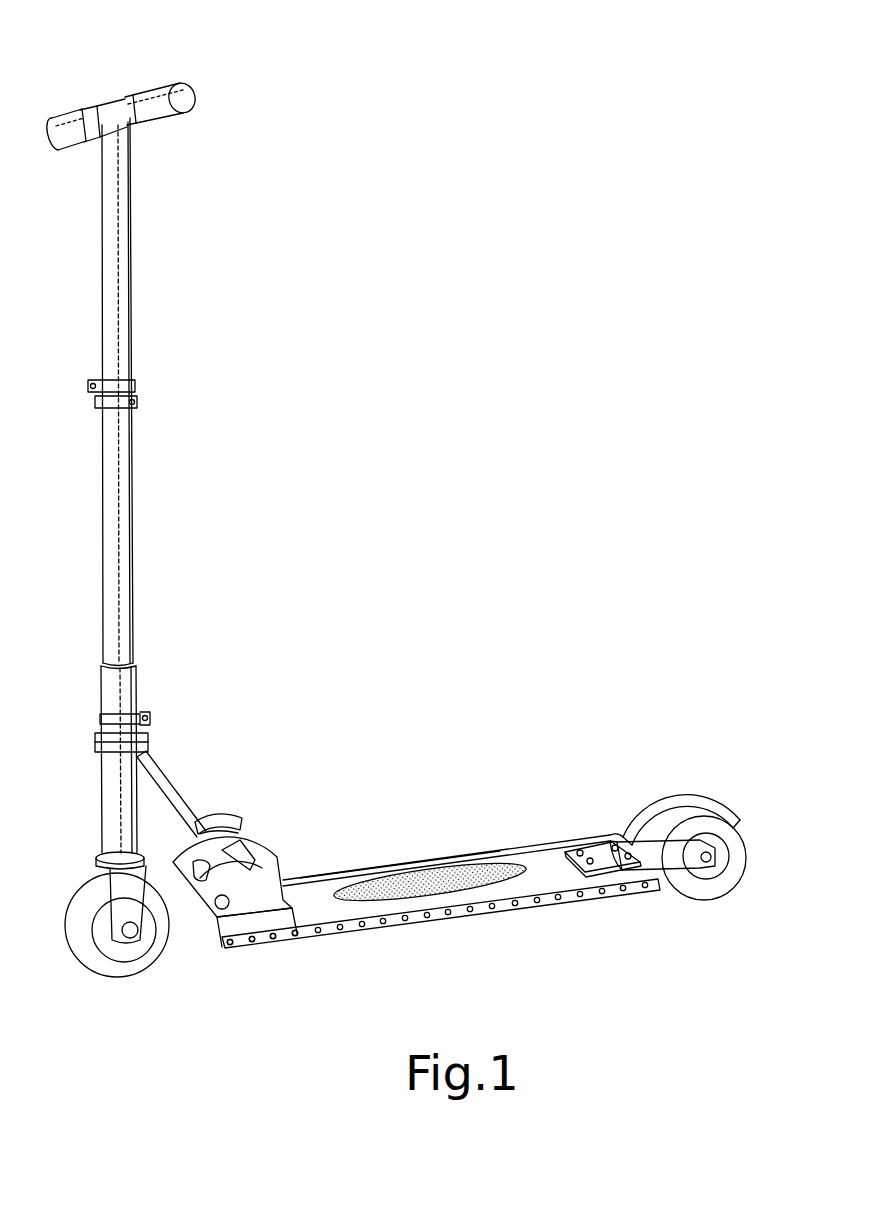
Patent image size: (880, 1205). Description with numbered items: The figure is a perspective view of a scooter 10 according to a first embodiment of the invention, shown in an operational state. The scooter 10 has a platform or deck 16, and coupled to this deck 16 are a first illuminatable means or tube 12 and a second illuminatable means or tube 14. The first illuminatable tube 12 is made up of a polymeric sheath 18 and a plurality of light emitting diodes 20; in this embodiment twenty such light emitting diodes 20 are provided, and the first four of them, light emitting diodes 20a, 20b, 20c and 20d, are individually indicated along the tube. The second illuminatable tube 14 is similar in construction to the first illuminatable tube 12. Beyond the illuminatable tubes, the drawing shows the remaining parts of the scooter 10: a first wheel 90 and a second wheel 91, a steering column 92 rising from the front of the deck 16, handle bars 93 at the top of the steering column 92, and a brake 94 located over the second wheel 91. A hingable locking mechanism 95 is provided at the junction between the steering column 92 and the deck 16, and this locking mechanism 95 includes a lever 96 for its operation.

The scooter 10 is at (300, 639).
The first illuminatable tube 12 is at (615, 890).
The second illuminatable tube 14 is at (500, 850).
The deck 16 is at (590, 840).
The polymeric sheath 18 is at (440, 918).
The light emitting diodes 20 is at (535, 908).
The light emitting diode 20a is at (224, 946).
The light emitting diode 20b is at (252, 943).
The light emitting diode 20c is at (276, 940).
The light emitting diode 20d is at (300, 937).
The first wheel 90 is at (88, 913).
The second wheel 91 is at (715, 885).
The steering column 92 is at (132, 448).
The handle bars 93 is at (163, 90).
The brake 94 is at (727, 800).
The hingable locking mechanism 95 is at (260, 843).
The lever 96 is at (236, 812).